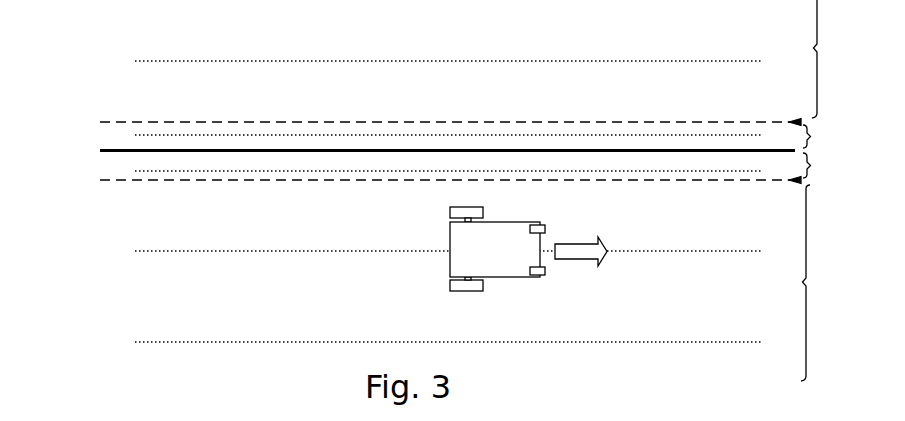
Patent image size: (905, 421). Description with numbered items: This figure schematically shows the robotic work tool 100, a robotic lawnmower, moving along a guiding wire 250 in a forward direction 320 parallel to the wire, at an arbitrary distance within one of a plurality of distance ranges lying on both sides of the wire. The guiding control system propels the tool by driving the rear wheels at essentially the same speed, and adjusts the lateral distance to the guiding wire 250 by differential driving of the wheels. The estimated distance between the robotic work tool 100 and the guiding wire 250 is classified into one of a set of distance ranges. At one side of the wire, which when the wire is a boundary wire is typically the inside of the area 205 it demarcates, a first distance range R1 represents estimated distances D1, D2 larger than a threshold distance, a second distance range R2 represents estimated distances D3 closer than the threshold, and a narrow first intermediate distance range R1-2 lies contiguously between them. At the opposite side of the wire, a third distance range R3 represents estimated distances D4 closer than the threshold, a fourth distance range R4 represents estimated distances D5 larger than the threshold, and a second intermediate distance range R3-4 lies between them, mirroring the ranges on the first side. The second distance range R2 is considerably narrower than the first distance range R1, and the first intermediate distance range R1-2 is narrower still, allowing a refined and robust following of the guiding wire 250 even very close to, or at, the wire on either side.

The robotic work tool 100 is at (483, 264).
The area 205 is at (750, 224).
The guiding wire 250 is at (100, 150).
The forward direction 320 is at (567, 251).
The estimated distance D1 is at (152, 342).
The estimated distance D2 is at (152, 251).
The estimated distance D3 is at (147, 171).
The estimated distance D4 is at (147, 135).
The estimated distance D5 is at (152, 61).
The first distance range R1 is at (824, 283).
The second distance range R2 is at (826, 166).
The third distance range R3 is at (826, 137).
The fourth distance range R4 is at (831, 59).
The first intermediate distance range R1-2 is at (800, 180).
The second intermediate distance range R3-4 is at (800, 122).